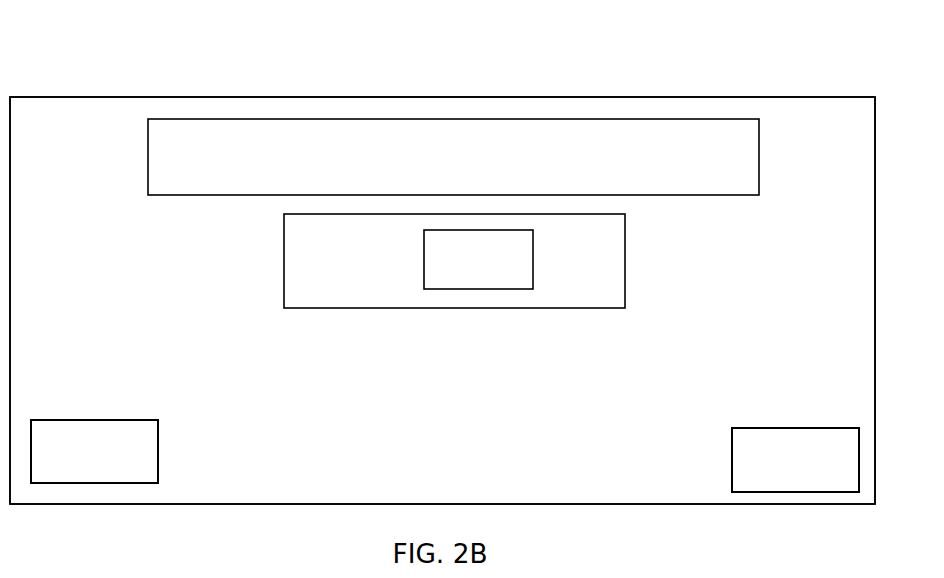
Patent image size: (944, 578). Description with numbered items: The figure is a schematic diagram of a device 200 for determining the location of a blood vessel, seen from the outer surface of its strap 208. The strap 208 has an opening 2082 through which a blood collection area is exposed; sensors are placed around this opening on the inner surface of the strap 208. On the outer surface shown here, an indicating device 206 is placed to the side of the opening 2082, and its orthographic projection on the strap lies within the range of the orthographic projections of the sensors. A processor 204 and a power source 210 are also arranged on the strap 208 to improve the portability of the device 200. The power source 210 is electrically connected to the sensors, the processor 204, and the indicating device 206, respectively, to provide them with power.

The device 200 is at (66, 44).
The strap 208 is at (183, 97).
The indicating device 206 is at (148, 168).
The opening 2082 is at (424, 257).
The processor 204 is at (95, 420).
The power source 210 is at (797, 428).